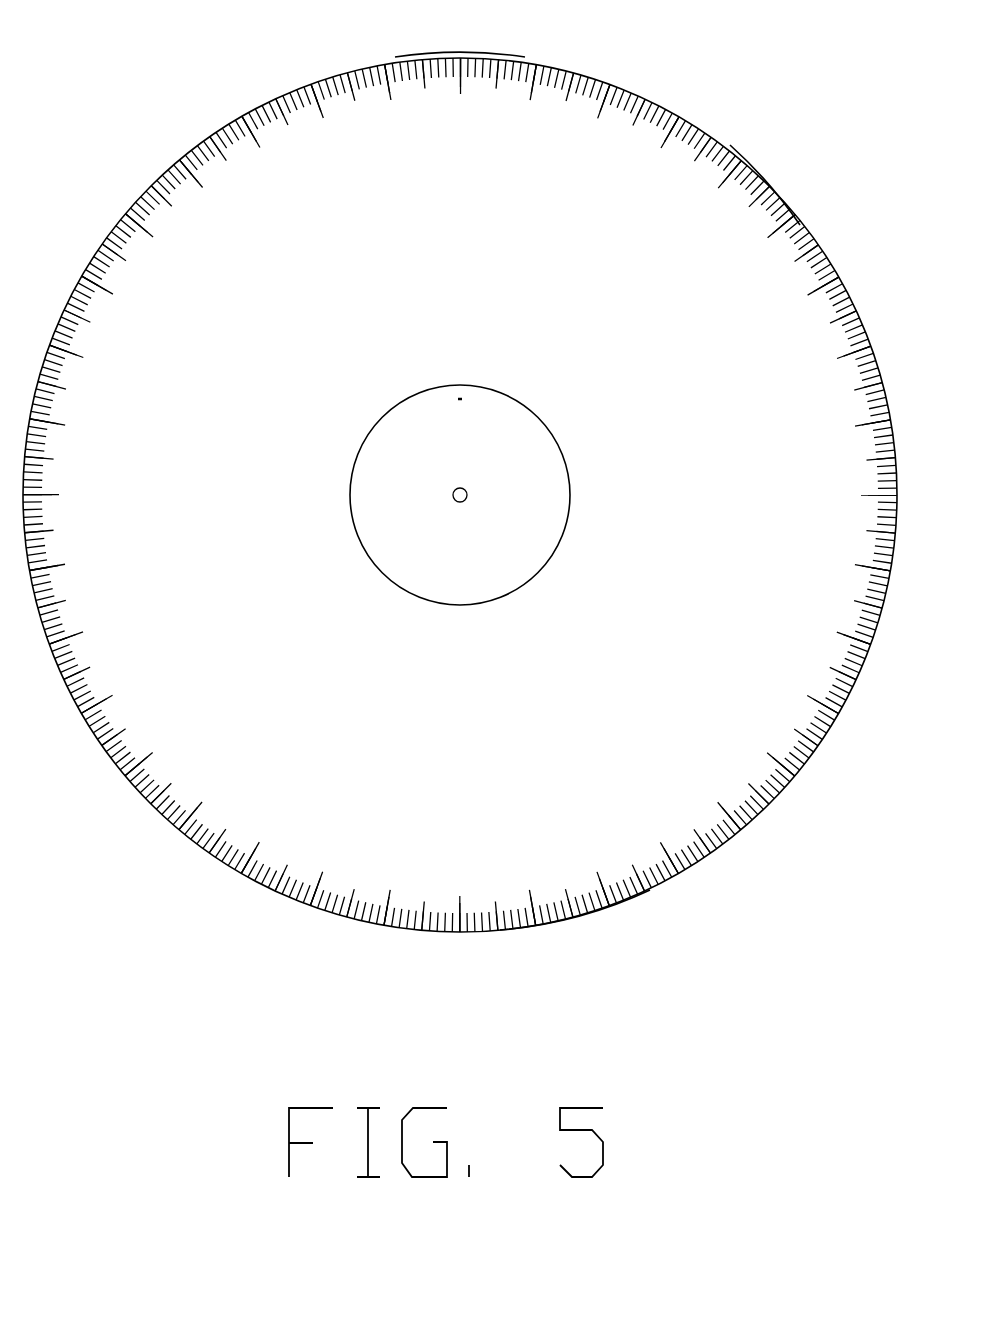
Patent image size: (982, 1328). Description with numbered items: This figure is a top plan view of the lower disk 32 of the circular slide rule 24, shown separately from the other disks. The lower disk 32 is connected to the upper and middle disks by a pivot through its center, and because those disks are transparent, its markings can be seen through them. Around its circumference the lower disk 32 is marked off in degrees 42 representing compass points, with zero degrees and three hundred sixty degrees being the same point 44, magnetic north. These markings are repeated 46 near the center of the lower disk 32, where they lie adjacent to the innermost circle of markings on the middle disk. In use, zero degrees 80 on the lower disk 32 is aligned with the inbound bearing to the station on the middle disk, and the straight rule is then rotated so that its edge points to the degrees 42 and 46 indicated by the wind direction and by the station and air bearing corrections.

The slide rule 24 is at (195, 848).
The lower disk 32 is at (757, 170).
The degrees 42 is at (535, 926).
The point 44 is at (458, 58).
The repeated markings 46 is at (555, 510).
The zero degrees 80 is at (462, 411).